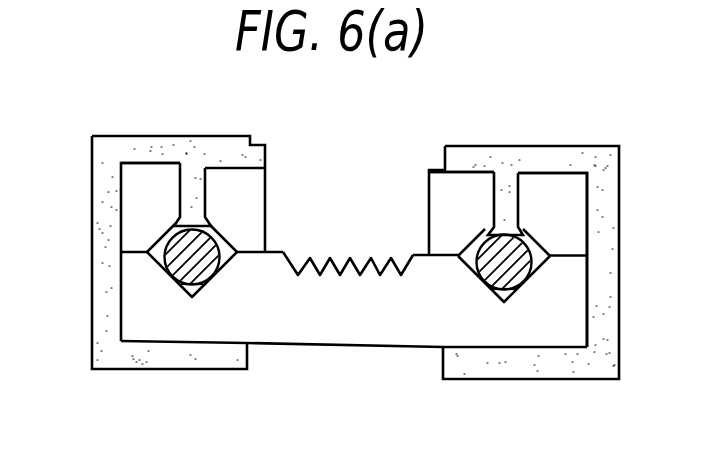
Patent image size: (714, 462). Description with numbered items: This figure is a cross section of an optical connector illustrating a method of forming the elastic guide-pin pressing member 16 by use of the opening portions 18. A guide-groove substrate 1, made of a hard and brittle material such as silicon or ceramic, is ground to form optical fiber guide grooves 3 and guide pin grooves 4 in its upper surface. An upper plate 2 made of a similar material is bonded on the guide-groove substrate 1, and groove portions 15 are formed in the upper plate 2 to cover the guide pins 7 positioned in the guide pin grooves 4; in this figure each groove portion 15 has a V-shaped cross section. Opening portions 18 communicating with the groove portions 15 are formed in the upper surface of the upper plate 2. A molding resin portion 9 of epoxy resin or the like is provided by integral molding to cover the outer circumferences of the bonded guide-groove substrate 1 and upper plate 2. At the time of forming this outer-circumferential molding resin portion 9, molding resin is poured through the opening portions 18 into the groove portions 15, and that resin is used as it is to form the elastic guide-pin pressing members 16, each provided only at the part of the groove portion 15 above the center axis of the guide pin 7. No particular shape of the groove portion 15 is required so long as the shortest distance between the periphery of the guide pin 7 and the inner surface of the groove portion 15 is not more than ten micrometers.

The guide-groove substrate 1 is at (275, 330).
The upper plate 2 is at (567, 230).
The optical fiber guide grooves 3 is at (366, 273).
The guide pin grooves 4 is at (182, 265).
The guide pin 7 is at (183, 287).
The molding resin portion 9 is at (113, 135).
The groove portion 15 is at (177, 228).
The elastic guide-pin pressing member 16 is at (198, 170).
The opening portion 18 is at (180, 186).